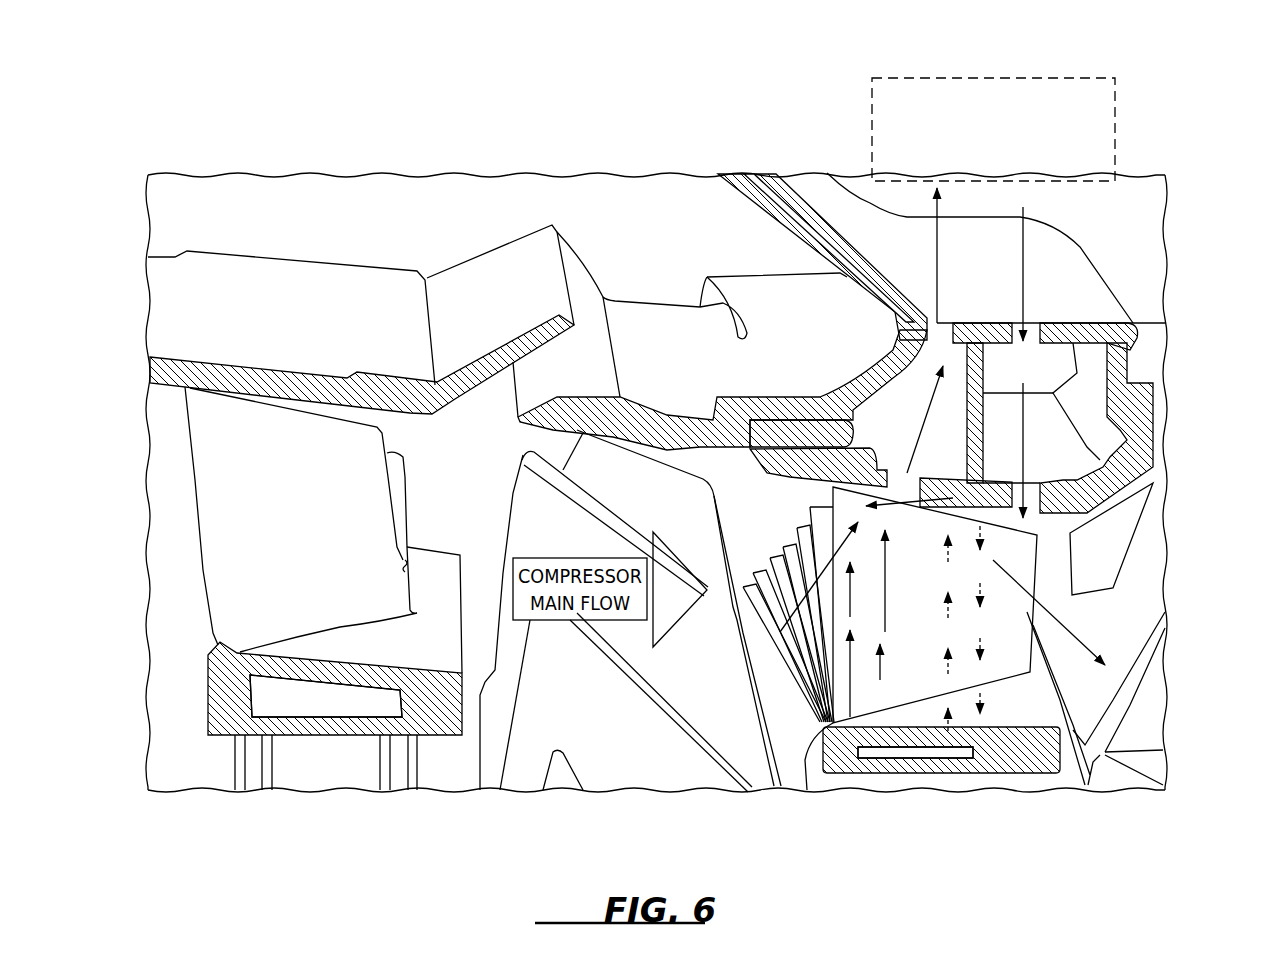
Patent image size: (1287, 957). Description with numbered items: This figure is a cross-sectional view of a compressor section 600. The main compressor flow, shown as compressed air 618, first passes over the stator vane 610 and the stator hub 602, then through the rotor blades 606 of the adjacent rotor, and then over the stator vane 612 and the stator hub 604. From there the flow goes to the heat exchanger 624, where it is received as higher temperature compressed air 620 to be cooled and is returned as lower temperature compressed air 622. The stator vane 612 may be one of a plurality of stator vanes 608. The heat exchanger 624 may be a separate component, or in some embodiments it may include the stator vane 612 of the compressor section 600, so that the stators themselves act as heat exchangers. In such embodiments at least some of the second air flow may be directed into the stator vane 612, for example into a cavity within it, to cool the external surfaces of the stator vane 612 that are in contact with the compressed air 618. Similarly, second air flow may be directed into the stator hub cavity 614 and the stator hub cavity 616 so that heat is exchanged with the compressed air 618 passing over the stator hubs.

The compressor section 600 is at (500, 133).
The stator hub 602 is at (433, 720).
The stator hub 604 is at (1017, 752).
The rotor blades 606 is at (633, 760).
The plurality of stator vanes 608 is at (987, 493).
The stator vane 610 is at (273, 567).
The stator vane 612 is at (920, 643).
The stator hub cavity 614 is at (317, 700).
The stator hub cavity 616 is at (940, 753).
The compressed air 618 is at (605, 613).
The higher temperature compressed air 620 is at (935, 257).
The lower temperature compressed air 622 is at (1028, 253).
The heat exchanger 624 is at (1117, 120).